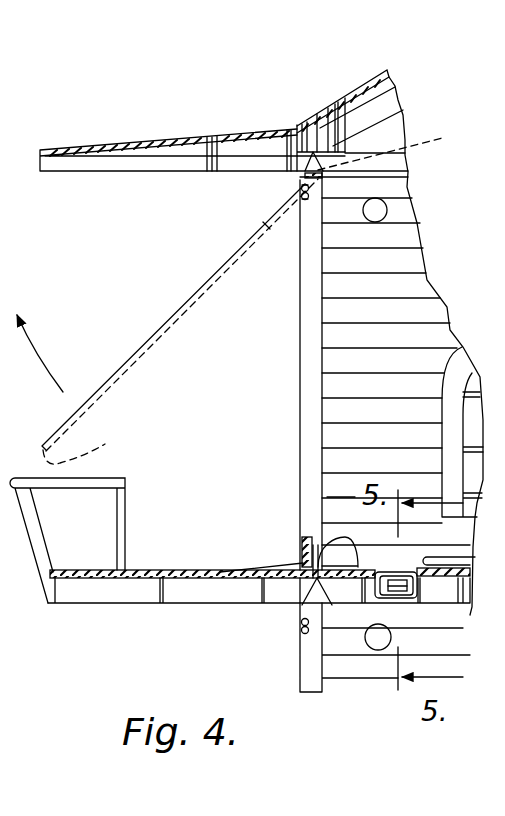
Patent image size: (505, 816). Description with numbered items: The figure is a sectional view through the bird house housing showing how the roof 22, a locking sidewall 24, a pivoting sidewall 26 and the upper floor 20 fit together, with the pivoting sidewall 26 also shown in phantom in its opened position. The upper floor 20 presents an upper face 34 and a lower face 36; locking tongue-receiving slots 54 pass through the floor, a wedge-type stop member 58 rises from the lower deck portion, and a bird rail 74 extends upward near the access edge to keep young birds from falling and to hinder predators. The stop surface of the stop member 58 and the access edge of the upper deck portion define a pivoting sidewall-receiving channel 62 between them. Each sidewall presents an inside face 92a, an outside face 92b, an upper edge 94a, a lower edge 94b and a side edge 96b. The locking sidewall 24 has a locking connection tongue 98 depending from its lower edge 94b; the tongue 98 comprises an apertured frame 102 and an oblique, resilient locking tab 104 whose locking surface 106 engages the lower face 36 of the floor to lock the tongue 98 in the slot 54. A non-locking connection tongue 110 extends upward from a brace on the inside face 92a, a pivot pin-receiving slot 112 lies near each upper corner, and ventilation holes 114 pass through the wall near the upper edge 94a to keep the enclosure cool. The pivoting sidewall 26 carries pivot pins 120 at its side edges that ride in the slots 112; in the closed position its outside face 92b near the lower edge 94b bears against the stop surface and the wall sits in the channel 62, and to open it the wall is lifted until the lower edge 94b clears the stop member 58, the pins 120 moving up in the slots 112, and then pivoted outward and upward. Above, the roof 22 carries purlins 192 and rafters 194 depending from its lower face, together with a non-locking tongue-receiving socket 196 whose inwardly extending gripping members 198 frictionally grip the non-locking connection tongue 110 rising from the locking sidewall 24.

The upper floor 20 is at (253, 587).
The roof 22 is at (367, 78).
The locking sidewall 24 is at (403, 287).
The pivoting sidewall 26 is at (167, 321).
The upper face 34 is at (135, 567).
The lower face 36 is at (193, 603).
The locking tongue-receiving slot 54 is at (483, 560).
The stop member 58 is at (276, 562).
The pivoting sidewall-receiving channel 62 is at (313, 540).
The bird rail 74 is at (110, 483).
The inside face 92a is at (157, 336).
The outside face 92b is at (227, 257).
The upper edge 94a is at (400, 149).
The lower edge 94b is at (94, 448).
The side edge 96b is at (265, 222).
The locking connection tongue 98 is at (400, 577).
The apertured frame 102 is at (418, 589).
The locking tab 104 is at (400, 592).
The locking surface 106 is at (393, 577).
The non-locking connection tongue 110 is at (300, 128).
The pivot pin-receiving slot 112 is at (308, 193).
The ventilation hole 114 is at (380, 212).
The pivot pin 120 is at (303, 200).
The purlin 192 is at (205, 164).
The rafter 194 is at (230, 147).
The non-locking tongue-receiving socket 196 is at (330, 128).
The gripping member 198 is at (310, 130).